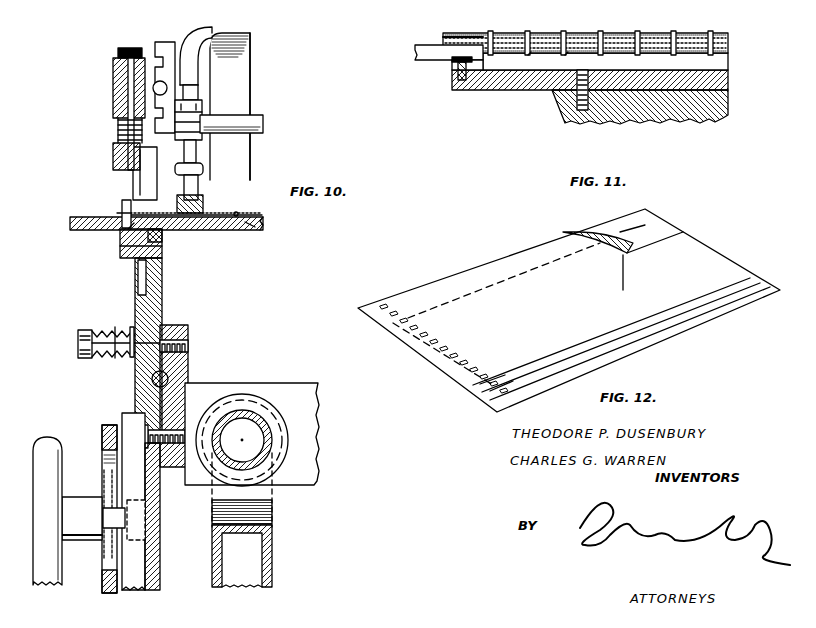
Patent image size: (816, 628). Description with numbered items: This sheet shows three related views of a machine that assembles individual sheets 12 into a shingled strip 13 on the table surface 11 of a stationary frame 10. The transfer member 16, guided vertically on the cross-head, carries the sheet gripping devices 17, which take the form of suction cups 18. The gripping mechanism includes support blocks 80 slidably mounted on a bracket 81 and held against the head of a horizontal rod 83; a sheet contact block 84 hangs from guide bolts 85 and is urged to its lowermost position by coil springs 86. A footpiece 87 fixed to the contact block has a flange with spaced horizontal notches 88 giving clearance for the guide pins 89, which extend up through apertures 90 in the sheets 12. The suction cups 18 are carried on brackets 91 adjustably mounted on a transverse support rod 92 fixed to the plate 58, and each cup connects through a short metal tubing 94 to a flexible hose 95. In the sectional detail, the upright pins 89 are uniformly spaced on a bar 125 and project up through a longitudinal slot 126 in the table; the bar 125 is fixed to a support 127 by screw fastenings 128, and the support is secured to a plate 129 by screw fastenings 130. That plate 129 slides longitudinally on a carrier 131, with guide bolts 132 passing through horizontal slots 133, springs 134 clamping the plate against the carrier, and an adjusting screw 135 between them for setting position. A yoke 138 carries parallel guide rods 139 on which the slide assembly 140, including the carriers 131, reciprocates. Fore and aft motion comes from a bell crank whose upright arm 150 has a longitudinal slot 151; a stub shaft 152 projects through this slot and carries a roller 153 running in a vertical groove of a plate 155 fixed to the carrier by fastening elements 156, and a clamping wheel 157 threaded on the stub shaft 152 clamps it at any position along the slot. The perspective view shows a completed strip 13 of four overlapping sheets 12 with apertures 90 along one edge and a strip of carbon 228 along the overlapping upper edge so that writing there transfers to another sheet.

In FIG. 10, the stationary frame 10 is at (255, 228).
In FIG. 10, the table surface 11 is at (132, 185).
In FIG. 11, the table surface 11 is at (430, 44).
In FIG. 10, the individual sheet 12 is at (262, 218).
In FIG. 11, the individual sheet 12 is at (470, 35).
In FIG. 12, the individual sheet 12 is at (633, 243).
In FIG. 11, the shingled strip 13 is at (690, 37).
In FIG. 12, the shingled strip 13 is at (447, 377).
In FIG. 10, the transfer member 16 is at (251, 97).
In FIG. 10, the sheet gripping devices 17 is at (208, 194).
In FIG. 10, the suction cup 18 is at (210, 213).
In FIG. 10, the plate 58 is at (250, 60).
In FIG. 10, the support block 80 is at (113, 63).
In FIG. 10, the bracket 81 is at (172, 53).
In FIG. 10, the horizontal rod 83 is at (157, 88).
In FIG. 10, the sheet contact block 84 is at (113, 157).
In FIG. 10, the guide bolt 85 is at (128, 105).
In FIG. 10, the coil spring 86 is at (118, 130).
In FIG. 10, the footpiece 87 is at (122, 205).
In FIG. 10, the horizontal notch 88 is at (119, 213).
In FIG. 10, the guide pin 89 is at (118, 231).
In FIG. 11, the guide pin 89 is at (565, 35).
In FIG. 11, the aperture 90 is at (566, 35).
In FIG. 12, the aperture 90 is at (392, 312).
In FIG. 10, the bracket 91 is at (203, 134).
In FIG. 10, the transverse support rod 92 is at (261, 125).
In FIG. 10, the metal tubing 94 is at (196, 156).
In FIG. 10, the flexible hose 95 is at (210, 31).
In FIG. 10, the bar 125 is at (128, 245).
In FIG. 11, the bar 125 is at (645, 62).
In FIG. 10, the longitudinal slot 126 is at (160, 240).
In FIG. 11, the longitudinal slot 126 is at (458, 60).
In FIG. 10, the support 127 is at (160, 252).
In FIG. 11, the support 127 is at (512, 92).
In FIG. 11, the screw fastening 128 is at (463, 82).
In FIG. 10, the plate 129 is at (163, 292).
In FIG. 11, the plate 129 is at (700, 110).
In FIG. 11, the screw fastening 130 is at (580, 108).
In FIG. 10, the carrier 131 is at (188, 355).
In FIG. 10, the guide bolt 132 is at (102, 342).
In FIG. 10, the horizontal slot 133 is at (188, 328).
In FIG. 10, the spring 134 is at (115, 360).
In FIG. 10, the adjusting screw 135 is at (168, 376).
In FIG. 10, the yoke 138 is at (268, 560).
In FIG. 10, the guide rod 139 is at (270, 448).
In FIG. 10, the slide assembly 140 is at (307, 433).
In FIG. 10, the upright arm 150 is at (102, 430).
In FIG. 10, the longitudinal slot 151 is at (110, 480).
In FIG. 10, the stub shaft 152 is at (95, 540).
In FIG. 10, the roller 153 is at (160, 529).
In FIG. 10, the plate 155 is at (160, 587).
In FIG. 10, the fastening element 156 is at (180, 420).
In FIG. 10, the clamping wheel 157 is at (43, 453).
In FIG. 12, the strip of carbon 228 is at (620, 277).